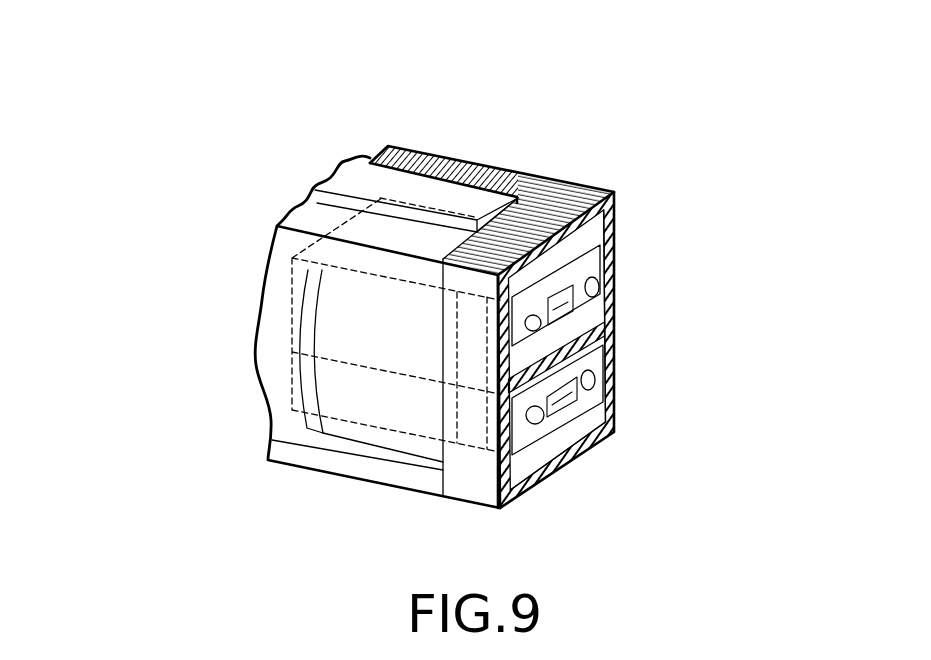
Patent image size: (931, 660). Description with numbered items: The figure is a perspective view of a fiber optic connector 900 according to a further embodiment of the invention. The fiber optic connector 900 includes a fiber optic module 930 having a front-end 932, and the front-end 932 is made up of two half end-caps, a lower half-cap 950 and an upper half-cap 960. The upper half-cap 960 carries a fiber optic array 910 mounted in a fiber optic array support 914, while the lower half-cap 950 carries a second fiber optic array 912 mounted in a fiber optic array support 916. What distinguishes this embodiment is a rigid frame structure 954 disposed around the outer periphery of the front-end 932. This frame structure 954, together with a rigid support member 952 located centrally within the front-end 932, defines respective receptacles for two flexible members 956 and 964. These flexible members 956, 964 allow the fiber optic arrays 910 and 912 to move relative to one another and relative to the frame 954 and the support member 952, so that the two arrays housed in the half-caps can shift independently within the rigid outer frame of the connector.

The fiber optic connector 900 is at (243, 175).
The fiber optic array 910 is at (612, 265).
The fiber optic array 912 is at (608, 410).
The fiber optic array support 914 is at (605, 266).
The fiber optic array support 916 is at (603, 438).
The fiber optic module 930 is at (391, 267).
The front-end 932 is at (560, 190).
The lower half-cap 950 is at (612, 386).
The rigid support member 952 is at (608, 315).
The rigid frame structure 954 is at (500, 480).
The flexible member 956 is at (552, 462).
The upper half-cap 960 is at (603, 240).
The flexible member 964 is at (608, 300).